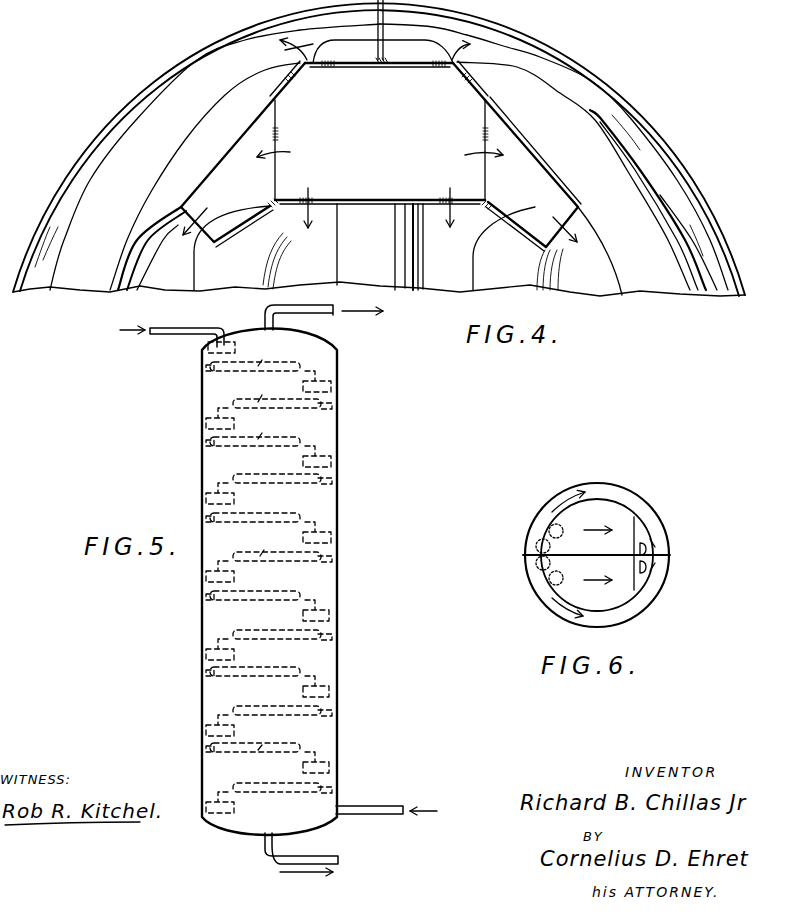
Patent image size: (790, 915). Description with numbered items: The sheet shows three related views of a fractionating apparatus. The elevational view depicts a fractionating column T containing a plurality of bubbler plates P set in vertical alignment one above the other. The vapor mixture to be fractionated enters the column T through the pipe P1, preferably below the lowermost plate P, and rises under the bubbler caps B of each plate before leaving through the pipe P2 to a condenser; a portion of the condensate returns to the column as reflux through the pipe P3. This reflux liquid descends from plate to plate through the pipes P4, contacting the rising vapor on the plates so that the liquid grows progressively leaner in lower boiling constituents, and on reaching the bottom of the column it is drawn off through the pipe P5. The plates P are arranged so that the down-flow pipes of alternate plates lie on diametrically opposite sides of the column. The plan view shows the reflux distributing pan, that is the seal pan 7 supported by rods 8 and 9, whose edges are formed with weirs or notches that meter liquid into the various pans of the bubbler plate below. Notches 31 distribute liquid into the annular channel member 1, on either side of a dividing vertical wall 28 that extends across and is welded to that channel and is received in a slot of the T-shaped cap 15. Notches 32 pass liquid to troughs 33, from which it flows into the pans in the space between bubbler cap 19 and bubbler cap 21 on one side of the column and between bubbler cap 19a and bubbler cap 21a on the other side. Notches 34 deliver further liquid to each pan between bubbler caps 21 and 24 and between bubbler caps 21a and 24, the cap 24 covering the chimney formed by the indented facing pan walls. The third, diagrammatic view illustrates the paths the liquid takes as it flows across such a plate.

In FIG. 4, the annular channel member 1 is at (652, 149).
In FIG. 4, the seal pan 7 is at (380, 132).
In FIG. 4, the rod 8 is at (273, 207).
In FIG. 4, the rod 9 is at (384, 58).
In FIG. 4, the T-shaped cap 15 is at (356, 50).
In FIG. 4, the bubbler cap 19 is at (85, 227).
In FIG. 4, the bubbler cap 19a is at (654, 185).
In FIG. 4, the bubbler cap 21 is at (242, 248).
In FIG. 4, the bubbler cap 21a is at (518, 248).
In FIG. 4, the bubbler cap 24 is at (380, 247).
In FIG. 4, the vertical wall 28 is at (385, 32).
In FIG. 4, the notches 31 is at (301, 66).
In FIG. 4, the notches 32 is at (275, 141).
In FIG. 4, the troughs 33 is at (413, 178).
In FIG. 4, the notches 34 is at (312, 201).
In FIG. 5, the fractionating column T is at (337, 588).
In FIG. 5, the bubbler plates P is at (330, 400).
In FIG. 5, the pipe P1 is at (368, 806).
In FIG. 5, the pipe P2 is at (336, 316).
In FIG. 5, the pipe P3 is at (176, 334).
In FIG. 5, the pipes P4 is at (222, 492).
In FIG. 5, the pipe P5 is at (263, 851).
In FIG. 5, the bubbler caps B is at (263, 543).